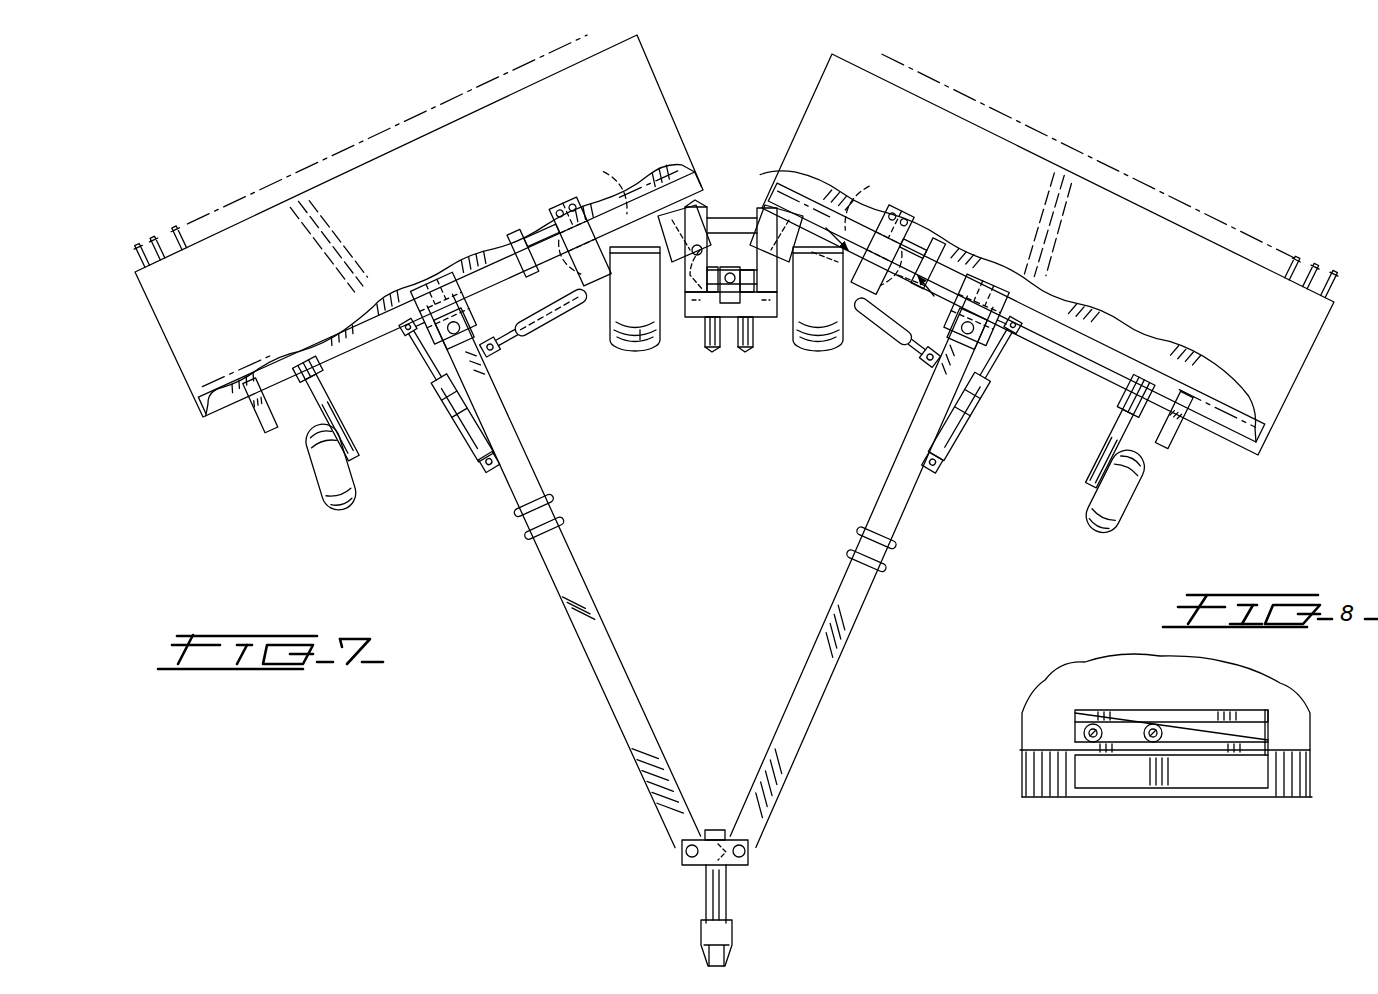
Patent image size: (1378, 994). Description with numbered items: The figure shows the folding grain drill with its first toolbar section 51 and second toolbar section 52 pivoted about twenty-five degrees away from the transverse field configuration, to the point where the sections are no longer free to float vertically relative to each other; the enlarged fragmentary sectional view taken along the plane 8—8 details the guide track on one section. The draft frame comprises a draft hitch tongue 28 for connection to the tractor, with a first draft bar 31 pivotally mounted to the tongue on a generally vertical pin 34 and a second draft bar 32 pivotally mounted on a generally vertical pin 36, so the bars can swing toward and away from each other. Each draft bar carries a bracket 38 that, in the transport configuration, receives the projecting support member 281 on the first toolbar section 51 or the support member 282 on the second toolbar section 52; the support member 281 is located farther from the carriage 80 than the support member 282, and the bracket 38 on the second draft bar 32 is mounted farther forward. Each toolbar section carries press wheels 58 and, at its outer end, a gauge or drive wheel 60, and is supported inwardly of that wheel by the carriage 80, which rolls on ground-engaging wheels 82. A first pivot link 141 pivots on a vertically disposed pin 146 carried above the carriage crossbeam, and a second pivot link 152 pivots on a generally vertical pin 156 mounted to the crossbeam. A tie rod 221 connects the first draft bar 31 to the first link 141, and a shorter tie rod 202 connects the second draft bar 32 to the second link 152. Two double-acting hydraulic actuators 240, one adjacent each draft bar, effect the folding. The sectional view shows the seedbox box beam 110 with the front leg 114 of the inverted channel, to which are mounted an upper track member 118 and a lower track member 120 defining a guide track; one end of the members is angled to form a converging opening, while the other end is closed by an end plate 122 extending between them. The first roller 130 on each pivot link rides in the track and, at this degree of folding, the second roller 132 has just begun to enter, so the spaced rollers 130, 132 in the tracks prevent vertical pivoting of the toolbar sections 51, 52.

In FIG. 7, the first toolbar section 51 is at (304, 188).
In FIG. 7, the second toolbar section 52 is at (1152, 208).
In FIG. 8, the second toolbar section 52 is at (1018, 726).
In FIG. 7, the press wheels 58 is at (178, 230).
In FIG. 7, the box beam 110 is at (340, 330).
In FIG. 8, the box beam 110 is at (1055, 790).
In FIG. 7, the upper track member 118 is at (545, 238).
In FIG. 8, the upper track member 118 is at (1195, 712).
In FIG. 8, the lower track member 120 is at (1194, 772).
In FIG. 7, the end plate 122 is at (520, 258).
In FIG. 8, the end plate 122 is at (1270, 727).
In FIG. 8, the front leg 114 is at (1090, 772).
In FIG. 7, the first roller 130 is at (555, 221).
In FIG. 8, the first roller 130 is at (1150, 726).
In FIG. 7, the second roller 132 is at (614, 191).
In FIG. 8, the second roller 132 is at (1098, 726).
In FIG. 7, the first pivot link 141 is at (675, 242).
In FIG. 7, the vertically disposed pin 146 is at (690, 274).
In FIG. 7, the second pivot link 152 is at (770, 257).
In FIG. 7, the generally vertically disposed pin 156 is at (745, 288).
In FIG. 7, the carriage 80 is at (700, 337).
In FIG. 7, the ground-engaging wheels 82 is at (636, 350).
In FIG. 7, the tie rod 221 is at (516, 334).
In FIG. 7, the tie rod 202 is at (898, 340).
In FIG. 7, the hydraulic cylinder-piston actuators 240 is at (470, 445).
In FIG. 7, the projecting latch or support member 281 is at (258, 432).
In FIG. 7, the projecting support latch or member 282 is at (1192, 437).
In FIG. 7, the gauge or drive wheel 60 is at (348, 514).
In FIG. 7, the bracket 38 is at (562, 523).
In FIG. 7, the first draft bar 31 is at (572, 633).
In FIG. 7, the second draft bar 32 is at (822, 627).
In FIG. 7, the generally vertical pin 34 is at (682, 857).
In FIG. 7, the generally vertical pin 36 is at (748, 856).
In FIG. 7, the draft hitch tongue 28 is at (732, 900).
In FIG. 7, the section plane 8— 8 is at (878, 263).